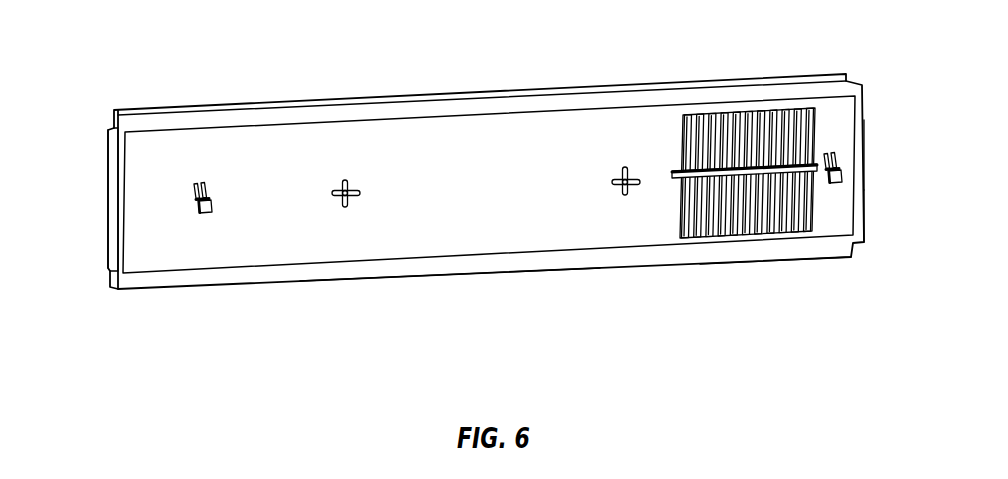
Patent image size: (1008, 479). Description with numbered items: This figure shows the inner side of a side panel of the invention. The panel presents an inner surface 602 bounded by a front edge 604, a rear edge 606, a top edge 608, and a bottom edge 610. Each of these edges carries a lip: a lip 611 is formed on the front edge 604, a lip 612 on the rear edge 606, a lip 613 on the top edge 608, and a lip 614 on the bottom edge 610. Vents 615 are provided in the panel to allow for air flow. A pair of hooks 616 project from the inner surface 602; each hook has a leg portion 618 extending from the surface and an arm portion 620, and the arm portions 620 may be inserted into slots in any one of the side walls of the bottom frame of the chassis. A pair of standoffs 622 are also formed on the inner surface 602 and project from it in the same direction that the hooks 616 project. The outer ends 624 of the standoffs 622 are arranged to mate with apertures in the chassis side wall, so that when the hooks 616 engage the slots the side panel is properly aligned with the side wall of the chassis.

The top edge 608 is at (337, 28).
The inner surface 602 is at (489, 165).
The front edge 604 is at (154, 200).
The rear edge 606 is at (893, 155).
The bottom edge 610 is at (450, 290).
The lip 611 is at (76, 199).
The lip 612 is at (893, 216).
The lip 613 is at (482, 82).
The lip 614 is at (775, 276).
The vents 615 is at (744, 205).
The hooks 616 is at (531, 178).
The leg portions 618 is at (235, 180).
The arm portions 620 is at (234, 218).
The standoffs 622 is at (486, 183).
The outer ends 624 is at (485, 202).